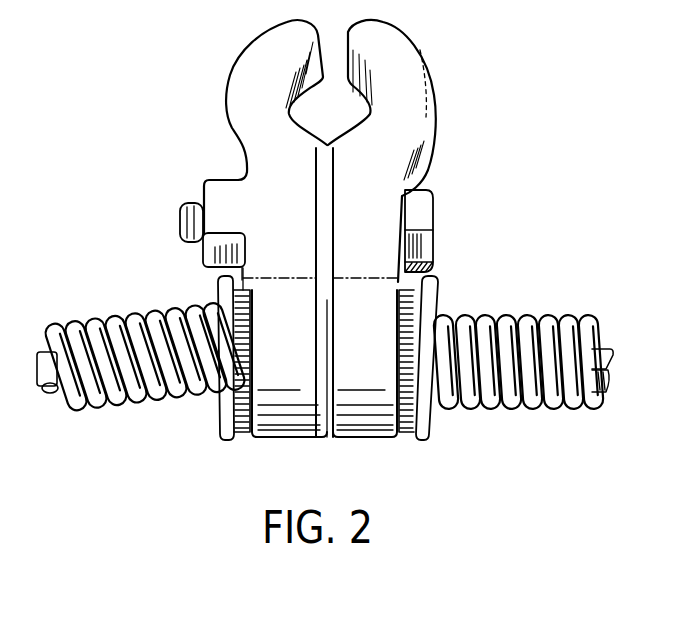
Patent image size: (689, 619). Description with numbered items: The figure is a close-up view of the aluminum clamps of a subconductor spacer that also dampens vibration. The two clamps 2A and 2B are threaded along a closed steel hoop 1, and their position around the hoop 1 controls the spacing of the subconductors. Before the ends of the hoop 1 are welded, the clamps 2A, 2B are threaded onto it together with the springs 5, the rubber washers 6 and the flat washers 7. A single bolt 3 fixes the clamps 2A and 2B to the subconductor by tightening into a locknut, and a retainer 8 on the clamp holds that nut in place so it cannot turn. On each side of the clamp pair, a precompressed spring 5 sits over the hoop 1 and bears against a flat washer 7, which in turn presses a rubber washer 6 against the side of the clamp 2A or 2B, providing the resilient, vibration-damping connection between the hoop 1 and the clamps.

The closed hoop 1 is at (608, 348).
The clamp 2A is at (429, 66).
The clamp 2B is at (229, 72).
The bolt 3 is at (435, 205).
The spring 5 is at (92, 318).
The rubber washer 6 is at (242, 433).
The flat washer 7 is at (219, 280).
The retainer 8 is at (217, 179).